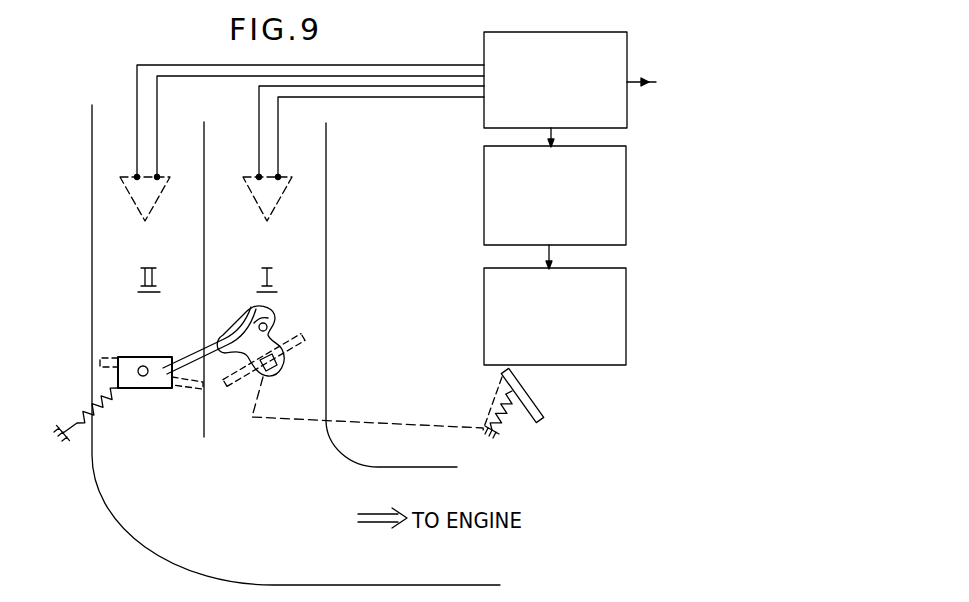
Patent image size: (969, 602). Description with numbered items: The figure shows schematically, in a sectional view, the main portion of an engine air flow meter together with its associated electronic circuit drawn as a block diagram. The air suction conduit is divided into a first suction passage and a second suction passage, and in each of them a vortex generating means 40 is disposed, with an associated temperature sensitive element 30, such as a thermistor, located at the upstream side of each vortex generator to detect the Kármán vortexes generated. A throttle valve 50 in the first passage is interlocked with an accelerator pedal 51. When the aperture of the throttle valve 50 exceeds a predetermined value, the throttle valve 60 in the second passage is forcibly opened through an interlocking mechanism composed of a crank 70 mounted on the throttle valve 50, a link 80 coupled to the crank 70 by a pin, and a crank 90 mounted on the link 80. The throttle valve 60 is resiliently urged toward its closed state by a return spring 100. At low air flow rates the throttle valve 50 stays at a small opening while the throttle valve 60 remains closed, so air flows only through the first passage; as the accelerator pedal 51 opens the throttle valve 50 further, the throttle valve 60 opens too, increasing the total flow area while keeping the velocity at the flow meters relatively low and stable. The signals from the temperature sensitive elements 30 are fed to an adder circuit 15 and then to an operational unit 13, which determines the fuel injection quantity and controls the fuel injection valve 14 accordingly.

The operational unit 13 is at (626, 215).
The fuel injection valve 14 is at (626, 330).
The adder circuit 15 is at (627, 97).
The temperature sensitive element 30 is at (137, 174).
The vortex generating means 40 is at (145, 198).
The throttle valve 50 is at (305, 347).
The accelerator pedal 51 is at (528, 393).
The throttle valve 60 is at (107, 358).
The crank 70 is at (268, 337).
The link 80 is at (197, 352).
The crank 90 is at (156, 361).
The return spring 100 is at (86, 402).